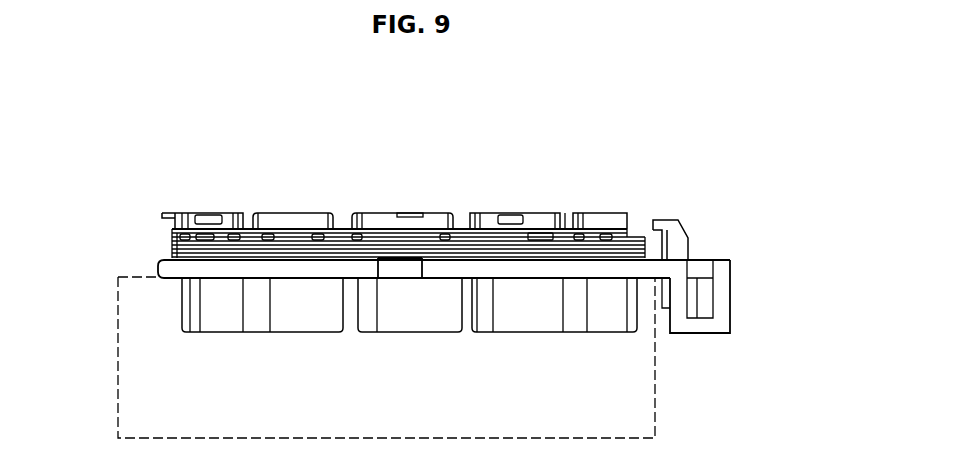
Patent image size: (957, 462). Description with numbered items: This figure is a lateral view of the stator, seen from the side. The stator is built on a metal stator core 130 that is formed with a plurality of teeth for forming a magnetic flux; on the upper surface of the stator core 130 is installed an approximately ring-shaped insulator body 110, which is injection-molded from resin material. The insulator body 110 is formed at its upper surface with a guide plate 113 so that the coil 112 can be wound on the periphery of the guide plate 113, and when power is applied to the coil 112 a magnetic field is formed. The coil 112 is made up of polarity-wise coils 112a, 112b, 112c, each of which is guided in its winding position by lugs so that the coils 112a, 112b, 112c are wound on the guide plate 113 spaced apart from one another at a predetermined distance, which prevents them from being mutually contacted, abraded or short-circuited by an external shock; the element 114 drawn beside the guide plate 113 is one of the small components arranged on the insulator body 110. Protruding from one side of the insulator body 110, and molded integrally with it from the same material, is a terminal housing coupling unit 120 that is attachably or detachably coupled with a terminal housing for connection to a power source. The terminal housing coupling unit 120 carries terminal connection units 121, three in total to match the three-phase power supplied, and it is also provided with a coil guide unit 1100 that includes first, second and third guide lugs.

The coil guide unit 1100 is at (705, 216).
The insulator body 110 is at (236, 155).
The coil 112 is at (655, 140).
The polarity-wise coil 112a is at (508, 229).
The polarity-wise coil 112b is at (553, 232).
The polarity-wise coil 112c is at (613, 236).
The guide plate 113 is at (306, 213).
The circuit element 114 is at (212, 213).
The terminal housing coupling unit 120 is at (705, 336).
The terminal connection unit 121 is at (690, 243).
The stator core 130 is at (118, 312).